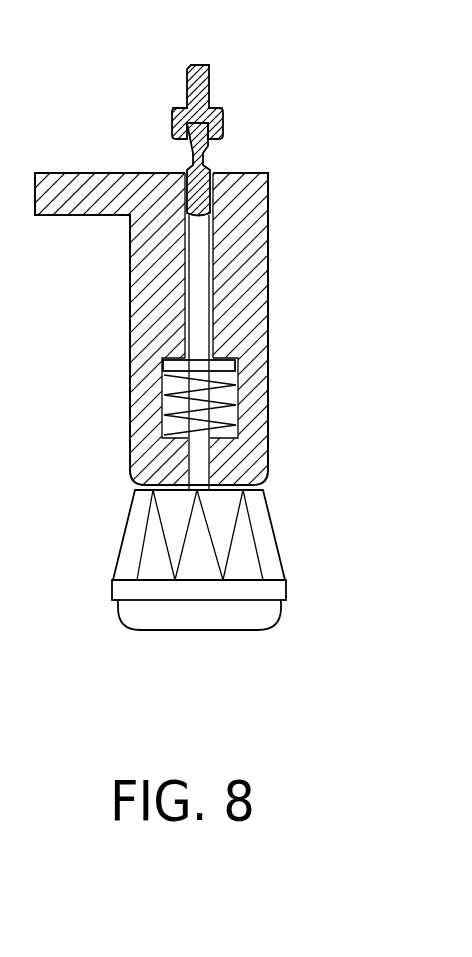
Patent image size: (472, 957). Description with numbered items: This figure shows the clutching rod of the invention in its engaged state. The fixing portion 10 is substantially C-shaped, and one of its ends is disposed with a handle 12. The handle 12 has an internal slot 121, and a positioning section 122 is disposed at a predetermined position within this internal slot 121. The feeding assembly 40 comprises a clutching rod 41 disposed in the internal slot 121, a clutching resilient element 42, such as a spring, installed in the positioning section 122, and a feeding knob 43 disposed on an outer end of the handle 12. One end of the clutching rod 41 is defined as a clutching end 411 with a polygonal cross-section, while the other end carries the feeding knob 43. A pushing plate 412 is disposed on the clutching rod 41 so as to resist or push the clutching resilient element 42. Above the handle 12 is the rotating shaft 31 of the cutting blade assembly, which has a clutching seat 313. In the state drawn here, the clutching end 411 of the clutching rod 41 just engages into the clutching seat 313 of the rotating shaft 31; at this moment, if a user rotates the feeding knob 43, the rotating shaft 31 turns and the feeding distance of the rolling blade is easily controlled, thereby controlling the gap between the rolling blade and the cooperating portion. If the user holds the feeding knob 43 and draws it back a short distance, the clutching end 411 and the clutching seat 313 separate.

The fixing portion 10 is at (208, 312).
The handle 12 is at (248, 284).
The internal slot 121 is at (213, 337).
The positioning section 122 is at (237, 400).
The rotating shaft 31 is at (217, 119).
The clutching seat 313 is at (217, 122).
The feeding assembly 40 is at (258, 571).
The clutching rod 41 is at (125, 284).
The clutching end 411 is at (193, 147).
The pushing plate 412 is at (173, 365).
The clutching resilient element 42 is at (173, 388).
The feeding knob 43 is at (270, 563).